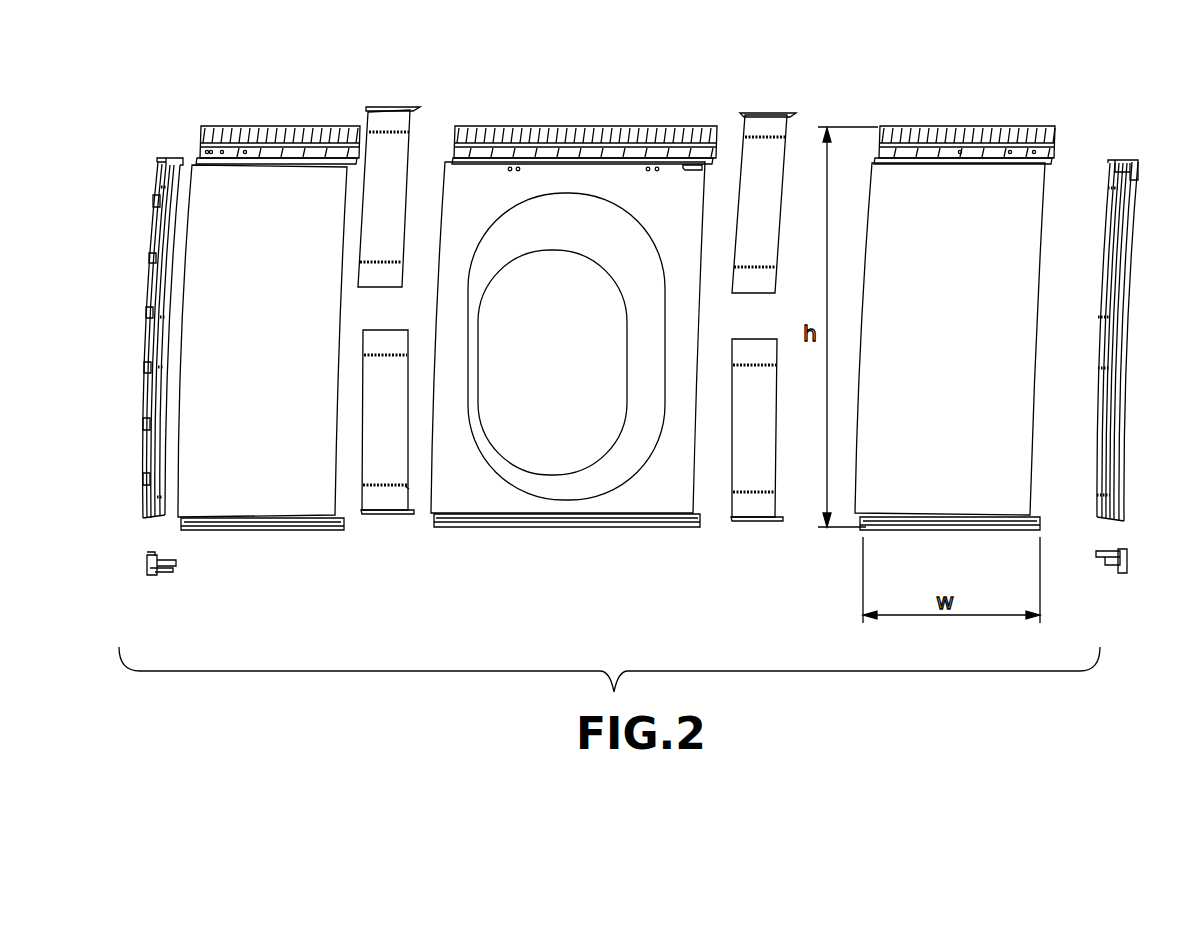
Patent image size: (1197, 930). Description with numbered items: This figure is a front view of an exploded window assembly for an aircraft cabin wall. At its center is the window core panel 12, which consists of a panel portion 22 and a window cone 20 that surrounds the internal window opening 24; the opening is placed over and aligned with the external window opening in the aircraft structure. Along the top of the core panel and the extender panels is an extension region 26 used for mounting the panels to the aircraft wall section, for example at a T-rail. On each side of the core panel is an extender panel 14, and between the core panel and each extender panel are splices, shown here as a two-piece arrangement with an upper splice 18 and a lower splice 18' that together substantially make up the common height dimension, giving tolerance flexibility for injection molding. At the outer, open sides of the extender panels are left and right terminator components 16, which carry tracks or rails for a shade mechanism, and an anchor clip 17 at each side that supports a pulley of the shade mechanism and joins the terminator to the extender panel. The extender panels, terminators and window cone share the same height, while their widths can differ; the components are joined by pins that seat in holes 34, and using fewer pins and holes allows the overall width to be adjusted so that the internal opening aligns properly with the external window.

The window core panel 12 is at (642, 503).
The extender panel 14 is at (303, 502).
The terminator component 16 is at (162, 513).
The anchor clip 17 is at (148, 553).
The upper splice 18 is at (577, 176).
The lower splice 18' is at (572, 462).
The window cone 20 is at (585, 483).
The panel portion 22 is at (476, 496).
The internal window opening 24 is at (570, 400).
The extension region 26 is at (281, 127).
The holes 34 is at (407, 487).